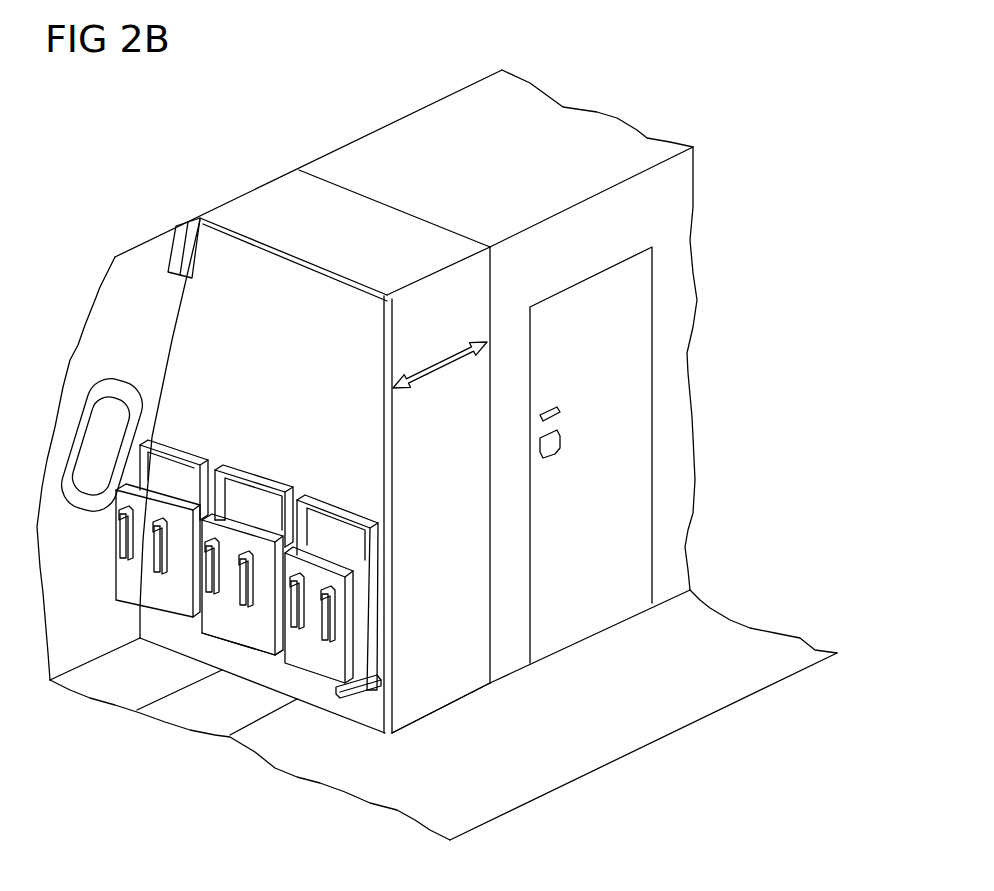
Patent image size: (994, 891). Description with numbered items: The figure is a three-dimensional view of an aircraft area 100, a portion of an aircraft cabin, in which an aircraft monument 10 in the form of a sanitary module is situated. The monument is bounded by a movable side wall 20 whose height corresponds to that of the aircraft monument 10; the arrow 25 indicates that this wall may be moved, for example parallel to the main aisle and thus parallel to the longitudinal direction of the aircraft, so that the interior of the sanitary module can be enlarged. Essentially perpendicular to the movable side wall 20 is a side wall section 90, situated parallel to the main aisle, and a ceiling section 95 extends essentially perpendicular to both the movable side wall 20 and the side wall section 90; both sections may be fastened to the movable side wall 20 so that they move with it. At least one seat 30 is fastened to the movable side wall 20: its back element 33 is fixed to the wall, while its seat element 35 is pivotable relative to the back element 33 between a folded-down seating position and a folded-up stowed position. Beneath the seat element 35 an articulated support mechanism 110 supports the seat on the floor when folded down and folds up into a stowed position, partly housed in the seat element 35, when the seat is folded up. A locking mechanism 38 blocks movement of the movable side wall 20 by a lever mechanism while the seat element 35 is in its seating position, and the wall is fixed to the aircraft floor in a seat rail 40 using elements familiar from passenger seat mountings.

The aircraft monument 10 is at (636, 98).
The ceiling section 95 is at (267, 203).
The movable side wall 20 is at (177, 344).
The arrow 25 is at (446, 362).
The back element 33 is at (257, 507).
The seat 30 is at (273, 678).
The seat element 35 is at (243, 630).
The support mechanism 110 is at (347, 592).
The locking mechanism 38 is at (366, 695).
The seat rail 40 is at (188, 702).
The side wall section 90 is at (430, 690).
The aircraft area 100 is at (575, 746).